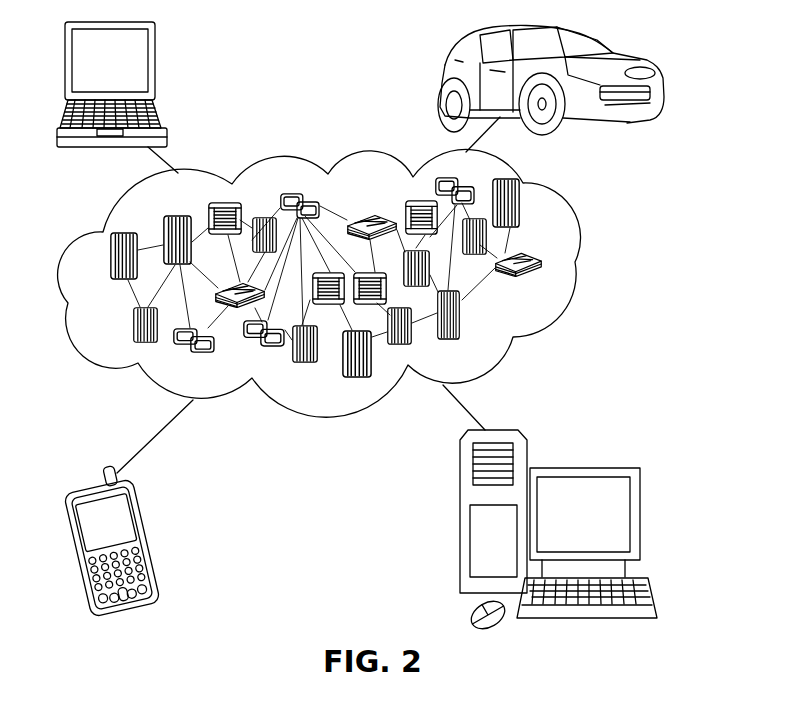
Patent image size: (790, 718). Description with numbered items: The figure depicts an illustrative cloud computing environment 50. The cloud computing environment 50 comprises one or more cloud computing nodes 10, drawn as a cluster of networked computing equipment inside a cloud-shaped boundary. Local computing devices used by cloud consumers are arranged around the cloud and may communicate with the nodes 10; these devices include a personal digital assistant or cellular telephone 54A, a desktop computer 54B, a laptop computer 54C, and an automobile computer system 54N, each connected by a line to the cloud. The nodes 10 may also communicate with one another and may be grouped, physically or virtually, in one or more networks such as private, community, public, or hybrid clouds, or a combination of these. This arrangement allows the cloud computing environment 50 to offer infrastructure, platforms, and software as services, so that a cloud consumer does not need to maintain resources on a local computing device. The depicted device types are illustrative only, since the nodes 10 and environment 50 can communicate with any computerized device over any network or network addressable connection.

The cloud computing nodes 10 is at (545, 285).
The cloud computing environment 50 is at (583, 267).
The personal digital assistant (PDA) or cellular telephone 54A is at (150, 540).
The desktop computer 54B is at (584, 467).
The laptop computer 54C is at (158, 68).
The automobile computer system 54N is at (441, 80).